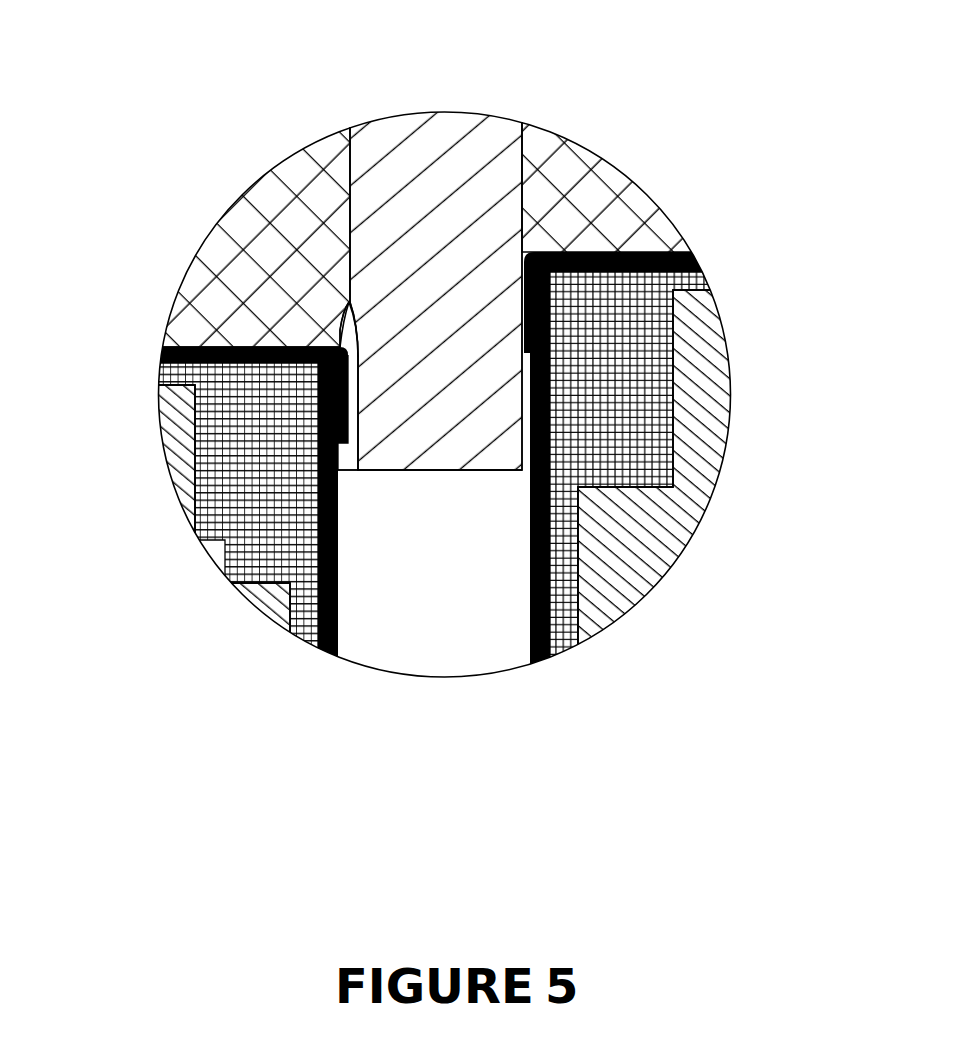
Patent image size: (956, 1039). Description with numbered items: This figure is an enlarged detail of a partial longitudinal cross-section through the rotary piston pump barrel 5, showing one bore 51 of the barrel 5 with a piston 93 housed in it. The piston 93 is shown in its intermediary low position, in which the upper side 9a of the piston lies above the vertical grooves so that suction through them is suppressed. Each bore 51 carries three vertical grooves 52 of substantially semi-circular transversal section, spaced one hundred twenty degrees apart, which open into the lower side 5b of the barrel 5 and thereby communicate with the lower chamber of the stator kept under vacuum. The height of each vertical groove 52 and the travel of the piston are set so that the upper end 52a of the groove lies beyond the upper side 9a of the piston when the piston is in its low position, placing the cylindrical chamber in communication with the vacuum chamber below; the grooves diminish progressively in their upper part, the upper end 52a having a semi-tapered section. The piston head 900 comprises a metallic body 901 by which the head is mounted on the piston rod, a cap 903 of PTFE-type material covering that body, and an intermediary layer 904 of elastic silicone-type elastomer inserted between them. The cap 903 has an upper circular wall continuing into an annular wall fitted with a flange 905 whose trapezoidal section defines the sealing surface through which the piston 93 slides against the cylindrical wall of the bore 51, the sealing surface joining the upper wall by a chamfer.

The barrel 5 is at (492, 126).
The lower side of the barrel 5b is at (472, 471).
The vertical groove 52 is at (358, 368).
The upper end of the vertical groove 52a is at (347, 313).
The bore 51 is at (527, 200).
The piston 93 is at (704, 407).
The upper side of the piston 9a is at (188, 347).
The cap 903 is at (215, 340).
The piston head 900 is at (176, 481).
The metallic body 901 is at (166, 405).
The intermediary layer 904 is at (210, 548).
The flange 905 is at (352, 408).